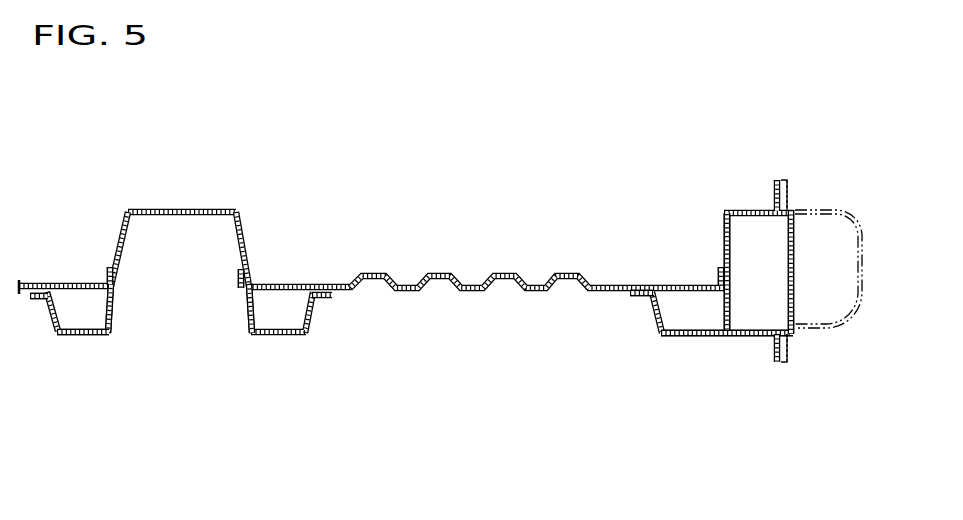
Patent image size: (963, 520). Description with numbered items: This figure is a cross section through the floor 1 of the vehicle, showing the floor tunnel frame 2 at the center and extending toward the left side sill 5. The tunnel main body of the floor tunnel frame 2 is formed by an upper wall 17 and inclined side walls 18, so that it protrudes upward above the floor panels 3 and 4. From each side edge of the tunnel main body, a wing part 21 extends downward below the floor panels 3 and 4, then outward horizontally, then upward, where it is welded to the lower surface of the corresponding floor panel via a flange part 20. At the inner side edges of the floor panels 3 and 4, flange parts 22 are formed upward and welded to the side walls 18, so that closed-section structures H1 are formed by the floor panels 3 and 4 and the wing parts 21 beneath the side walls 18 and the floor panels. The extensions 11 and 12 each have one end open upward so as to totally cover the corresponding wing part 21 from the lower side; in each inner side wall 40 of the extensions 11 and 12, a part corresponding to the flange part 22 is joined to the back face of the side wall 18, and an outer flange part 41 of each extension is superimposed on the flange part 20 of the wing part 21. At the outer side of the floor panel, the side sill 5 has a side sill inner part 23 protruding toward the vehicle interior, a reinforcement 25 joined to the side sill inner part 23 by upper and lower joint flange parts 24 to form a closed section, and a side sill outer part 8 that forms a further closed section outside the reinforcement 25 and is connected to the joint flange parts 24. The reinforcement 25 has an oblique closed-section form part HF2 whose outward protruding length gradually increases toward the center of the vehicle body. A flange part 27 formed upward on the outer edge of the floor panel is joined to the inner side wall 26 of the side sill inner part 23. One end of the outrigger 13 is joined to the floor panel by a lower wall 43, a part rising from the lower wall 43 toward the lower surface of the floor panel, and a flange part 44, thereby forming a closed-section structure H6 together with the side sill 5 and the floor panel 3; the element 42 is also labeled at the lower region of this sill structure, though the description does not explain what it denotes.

The floor 1 is at (438, 265).
The floor tunnel frame 2 is at (365, 232).
The floor panel 3 is at (567, 273).
The floor panel 4 is at (53, 283).
The left side sill 5 is at (753, 210).
The side sill outer part 8 is at (838, 210).
The extension 11 is at (313, 312).
The extension 12 is at (93, 337).
The outrigger 13 is at (675, 337).
The upper wall 17 is at (177, 208).
The inclined side wall 18 is at (123, 235).
The flange part 20 is at (23, 293).
The wing part 21 is at (113, 313).
The flange part 22 is at (112, 280).
The side sill inner part 23 is at (722, 215).
The joint flange part 24 is at (787, 203).
The reinforcement 25 is at (795, 278).
The inner side wall 26 is at (723, 232).
The flange part 27 is at (720, 270).
The inner side wall 40 is at (124, 293).
The outer flange part 41 is at (37, 300).
The bottom wall of box 42 is at (744, 328).
The lower wall 43 is at (708, 337).
The flange part 44 is at (640, 297).
The closed-section structure H1 is at (75, 313).
The closed-section structure H6 is at (710, 323).
The oblique closed-section form part HF2 is at (783, 282).